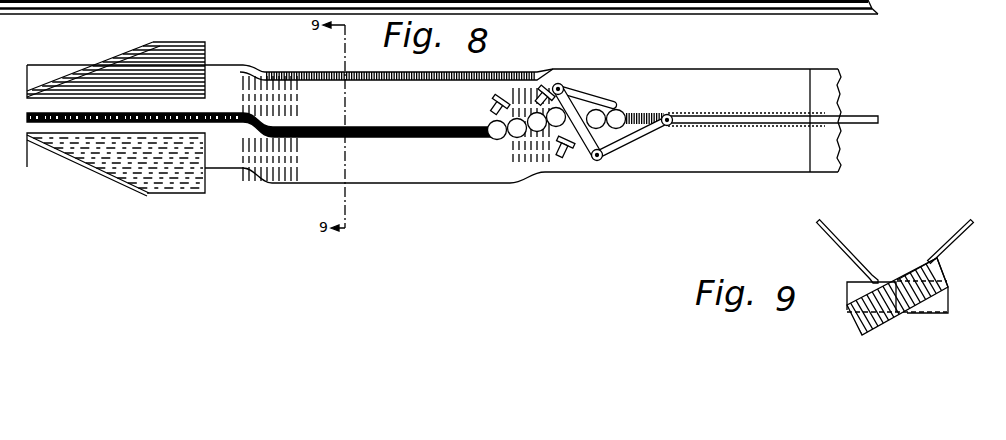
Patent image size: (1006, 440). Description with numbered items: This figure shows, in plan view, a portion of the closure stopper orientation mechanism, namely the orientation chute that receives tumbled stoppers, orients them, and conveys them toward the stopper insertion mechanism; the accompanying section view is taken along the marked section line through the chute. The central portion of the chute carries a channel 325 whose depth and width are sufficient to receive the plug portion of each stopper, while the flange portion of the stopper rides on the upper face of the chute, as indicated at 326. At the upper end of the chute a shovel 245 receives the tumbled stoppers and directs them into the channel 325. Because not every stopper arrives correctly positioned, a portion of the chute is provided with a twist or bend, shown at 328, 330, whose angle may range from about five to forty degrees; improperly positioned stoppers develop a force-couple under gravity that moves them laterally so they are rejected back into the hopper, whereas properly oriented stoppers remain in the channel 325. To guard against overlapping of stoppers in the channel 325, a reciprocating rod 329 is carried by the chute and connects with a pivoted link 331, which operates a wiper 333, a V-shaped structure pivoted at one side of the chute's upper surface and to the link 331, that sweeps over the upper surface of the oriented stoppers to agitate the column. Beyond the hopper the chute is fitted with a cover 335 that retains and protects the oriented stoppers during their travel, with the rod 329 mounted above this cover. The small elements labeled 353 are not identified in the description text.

In FIG. 8, the shovel 245 is at (121, 182).
In FIG. 9, the shovel 245 is at (957, 233).
In FIG. 8, the channel 325 is at (207, 111).
In FIG. 9, the channel 325 is at (903, 311).
In FIG. 8, the flange portion riding on upper face of chute 326 is at (493, 138).
In FIG. 8, the twist or bend 328 is at (277, 178).
In FIG. 8, the reciprocating rod 329 is at (847, 118).
In FIG. 8, the twist or bend 330 is at (527, 182).
In FIG. 8, the pivoted link 331 is at (620, 140).
In FIG. 8, the wiper 333 is at (590, 96).
In FIG. 8, the cover 335 is at (817, 155).
In FIG. 8, the rollers 353 is at (492, 100).